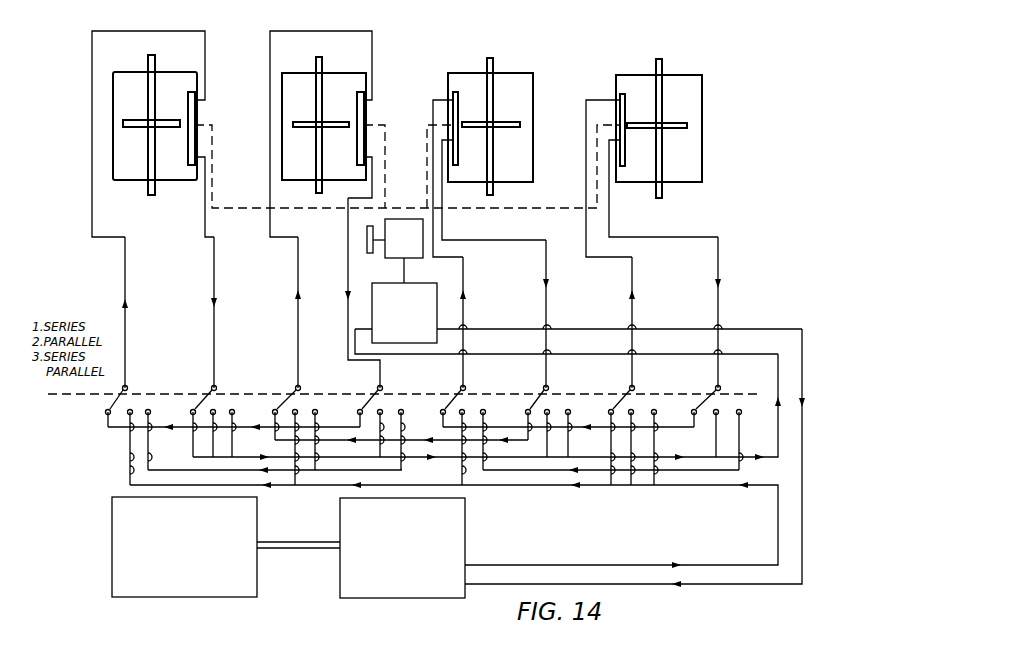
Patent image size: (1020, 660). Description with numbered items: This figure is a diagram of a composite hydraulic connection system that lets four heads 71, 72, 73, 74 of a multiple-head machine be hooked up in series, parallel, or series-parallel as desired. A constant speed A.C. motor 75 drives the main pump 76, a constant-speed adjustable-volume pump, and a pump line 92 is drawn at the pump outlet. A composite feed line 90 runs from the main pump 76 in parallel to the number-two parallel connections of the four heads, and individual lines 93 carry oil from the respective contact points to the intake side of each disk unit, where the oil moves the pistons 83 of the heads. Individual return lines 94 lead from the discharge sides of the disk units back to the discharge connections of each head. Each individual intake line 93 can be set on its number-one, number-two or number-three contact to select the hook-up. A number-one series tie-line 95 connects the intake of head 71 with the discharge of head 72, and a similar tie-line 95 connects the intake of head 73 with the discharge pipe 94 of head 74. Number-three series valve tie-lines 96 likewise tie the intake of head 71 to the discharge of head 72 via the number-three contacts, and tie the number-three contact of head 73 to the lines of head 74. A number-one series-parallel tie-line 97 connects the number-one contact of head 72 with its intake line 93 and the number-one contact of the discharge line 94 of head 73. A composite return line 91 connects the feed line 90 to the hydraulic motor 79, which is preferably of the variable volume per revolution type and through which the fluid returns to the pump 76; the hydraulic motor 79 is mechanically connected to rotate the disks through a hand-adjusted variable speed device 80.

The first head 71 is at (178, 80).
The second head 72 is at (355, 82).
The third head 73 is at (525, 92).
The fourth head 74 is at (693, 88).
The piston 83 is at (343, 120).
The hand-adjusted variable speed device 80 is at (393, 256).
The hydraulic motor 79 is at (408, 338).
The individual line 93 is at (127, 341).
The individual return line 94 is at (215, 342).
The No. 1 series tie-line 95 is at (112, 428).
The No. 3 series valve tie-line 96 is at (347, 471).
The No. 1 series-parallel tie-line 97 is at (442, 441).
The composite feed line 90 is at (690, 487).
The composite return line 91 is at (768, 458).
The pump outlet line 92 is at (791, 585).
The constant speed A.C. motor 75 is at (240, 585).
The main pump 76 is at (455, 552).